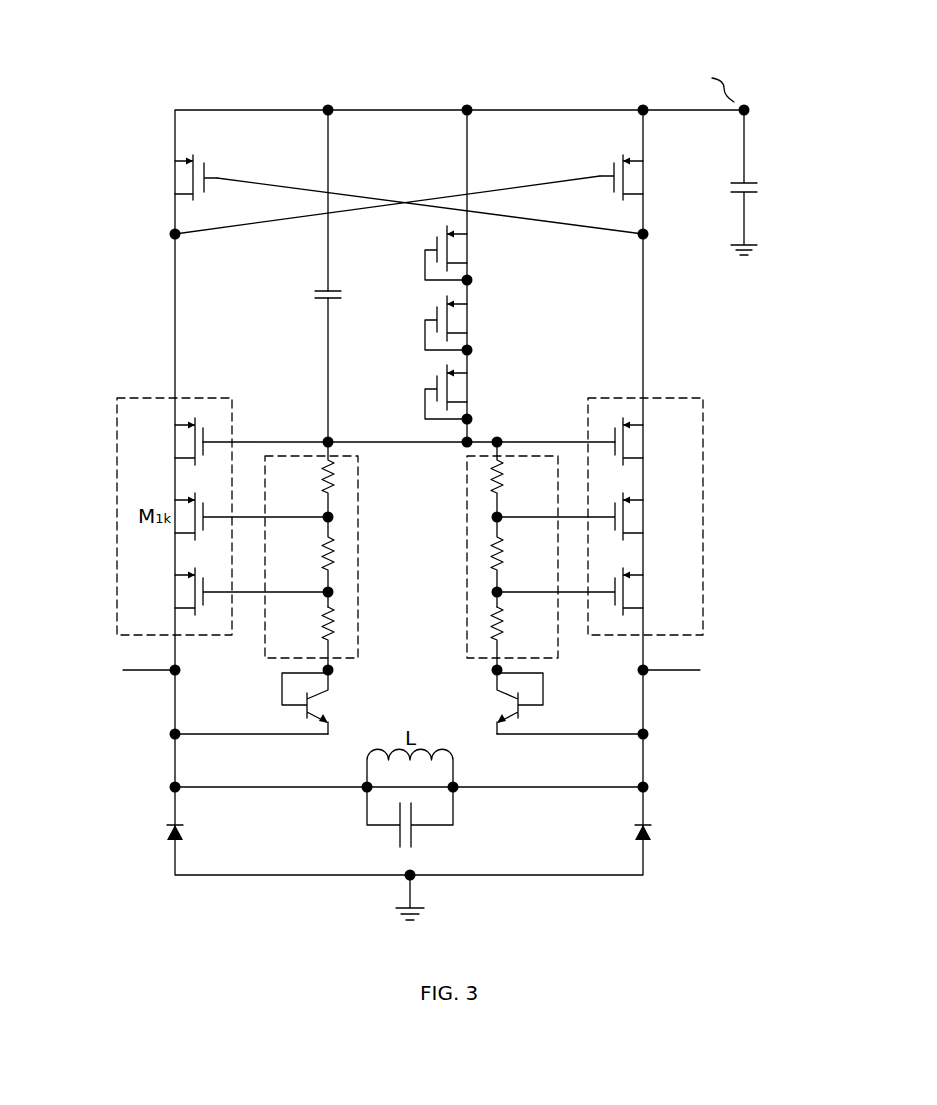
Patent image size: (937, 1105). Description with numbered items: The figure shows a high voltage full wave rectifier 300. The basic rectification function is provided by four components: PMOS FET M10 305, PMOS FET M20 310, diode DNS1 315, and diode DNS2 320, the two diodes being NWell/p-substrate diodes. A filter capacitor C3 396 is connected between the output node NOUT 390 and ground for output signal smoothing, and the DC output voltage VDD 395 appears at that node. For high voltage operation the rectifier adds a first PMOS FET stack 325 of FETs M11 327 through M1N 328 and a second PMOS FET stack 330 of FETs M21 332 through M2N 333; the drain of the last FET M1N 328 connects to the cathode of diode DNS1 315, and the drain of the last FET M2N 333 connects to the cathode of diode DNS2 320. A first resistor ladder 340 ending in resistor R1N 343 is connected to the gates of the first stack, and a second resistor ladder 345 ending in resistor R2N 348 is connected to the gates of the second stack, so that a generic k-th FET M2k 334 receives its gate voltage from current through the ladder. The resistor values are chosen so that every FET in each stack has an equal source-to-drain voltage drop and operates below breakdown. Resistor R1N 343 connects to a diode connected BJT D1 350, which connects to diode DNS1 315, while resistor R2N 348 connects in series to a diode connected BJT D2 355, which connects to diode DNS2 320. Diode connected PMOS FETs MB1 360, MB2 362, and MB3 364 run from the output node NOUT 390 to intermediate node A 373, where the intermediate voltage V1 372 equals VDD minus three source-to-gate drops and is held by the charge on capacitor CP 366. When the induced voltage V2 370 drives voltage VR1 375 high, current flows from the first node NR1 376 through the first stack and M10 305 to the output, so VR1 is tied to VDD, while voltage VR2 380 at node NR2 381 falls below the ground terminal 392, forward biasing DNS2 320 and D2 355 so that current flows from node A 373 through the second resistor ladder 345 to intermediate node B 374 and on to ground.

The high voltage full wave rectifier 300 is at (118, 56).
The PMOS FET M10 305 is at (146, 164).
The PMOS FET M20 310 is at (662, 190).
The diode DNS1 315 is at (119, 838).
The diode DNS2 320 is at (678, 848).
The first PMOS FET stack 325 is at (131, 395).
The PMOS FET M11 327 is at (129, 450).
The PMOS FET M1N 328 is at (129, 600).
The second PMOS FET stack 330 is at (690, 398).
The PMOS FET M21 332 is at (690, 438).
The PMOS FET M2N 333 is at (690, 590).
The k-th PMOS FET M2k 334 is at (690, 510).
The first resistor ladder 340 is at (303, 562).
The resistor R1N 343 is at (341, 626).
The second resistor ladder 345 is at (516, 573).
The resistor R2N 348 is at (486, 632).
The diode connected BJT D1 350 is at (347, 697).
The diode connected BJT D2 355 is at (466, 701).
The diode connected PMOS FET MB1 360 is at (505, 250).
The diode connected PMOS FET MB2 362 is at (505, 318).
The diode connected PMOS FET MB3 364 is at (505, 384).
The capacitor CP 366 is at (289, 296).
The induced voltage V2 370 is at (394, 794).
The intermediate voltage V1 372 is at (431, 461).
The intermediate node A 373 is at (510, 430).
The intermediate node B 374 is at (452, 671).
The voltage VR1 375 is at (119, 700).
The first node NR1 376 is at (141, 710).
The voltage VR2 380 is at (690, 668).
The node NR2 381 is at (688, 698).
The output node NOUT 390 is at (612, 84).
The ground terminal 392 is at (428, 912).
The output voltage VDD 395 is at (666, 72).
The filter capacitor C3 396 is at (766, 226).